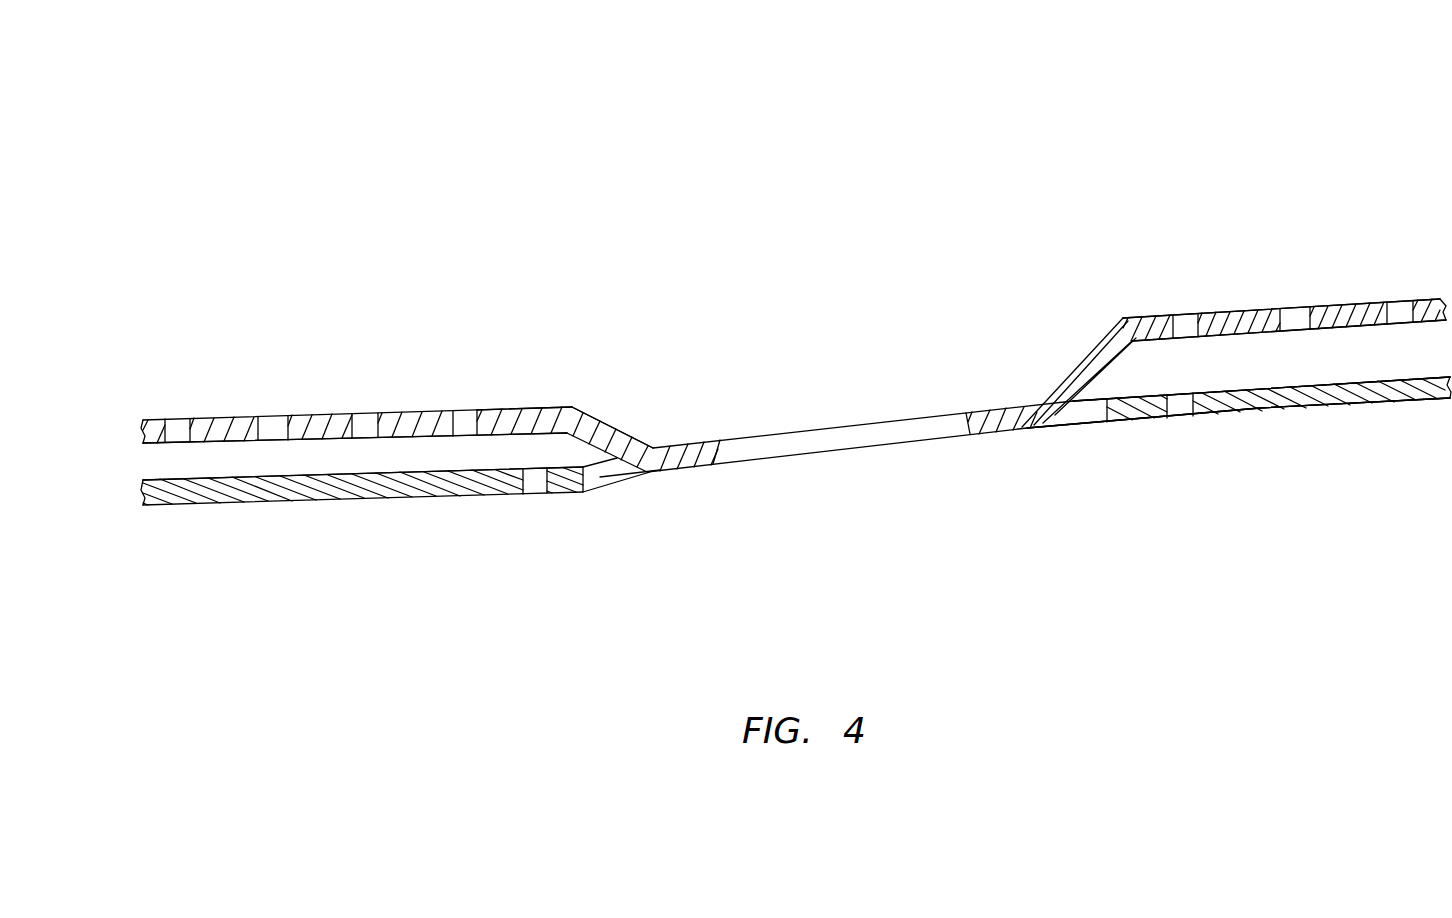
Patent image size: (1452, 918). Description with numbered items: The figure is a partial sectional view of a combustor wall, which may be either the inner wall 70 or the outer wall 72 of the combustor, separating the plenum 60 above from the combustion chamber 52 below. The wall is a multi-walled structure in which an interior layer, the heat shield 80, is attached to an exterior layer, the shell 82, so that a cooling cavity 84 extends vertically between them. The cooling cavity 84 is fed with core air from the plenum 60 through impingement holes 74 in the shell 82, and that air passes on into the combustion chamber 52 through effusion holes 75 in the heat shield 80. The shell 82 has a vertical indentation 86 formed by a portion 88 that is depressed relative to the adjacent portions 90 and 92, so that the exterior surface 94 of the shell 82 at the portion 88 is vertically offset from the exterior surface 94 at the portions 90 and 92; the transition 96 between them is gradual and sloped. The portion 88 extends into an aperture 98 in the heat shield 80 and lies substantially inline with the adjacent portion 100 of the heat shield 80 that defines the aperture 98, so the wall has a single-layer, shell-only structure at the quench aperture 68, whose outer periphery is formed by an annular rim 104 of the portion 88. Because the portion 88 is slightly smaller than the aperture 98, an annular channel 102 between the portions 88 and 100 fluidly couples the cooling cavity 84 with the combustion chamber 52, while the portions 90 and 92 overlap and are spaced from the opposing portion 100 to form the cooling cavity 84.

The combustion chamber 52 is at (673, 653).
The plenum 60 is at (669, 198).
The quench aperture 68 is at (846, 418).
The inner wall 70 is at (1338, 158).
The outer wall 72 is at (1238, 257).
The impingement holes 74 is at (370, 425).
The effusion holes 75 is at (330, 490).
The heat shield 80 is at (165, 495).
The shell 82 is at (155, 420).
The cooling cavity 84 is at (338, 470).
The vertical indentation 86 is at (663, 385).
The depressed portion of the shell 88 is at (1000, 408).
The adjacent portion of the shell 90 is at (518, 408).
The adjacent portion of the shell 92 is at (1147, 318).
The exterior surface 94 is at (220, 418).
The transition 96 is at (606, 420).
The aperture in the heat shield 98 is at (620, 490).
The adjacent portion of the heat shield 100 is at (572, 490).
The channel 102 is at (1083, 415).
The annular rim 104 is at (697, 468).